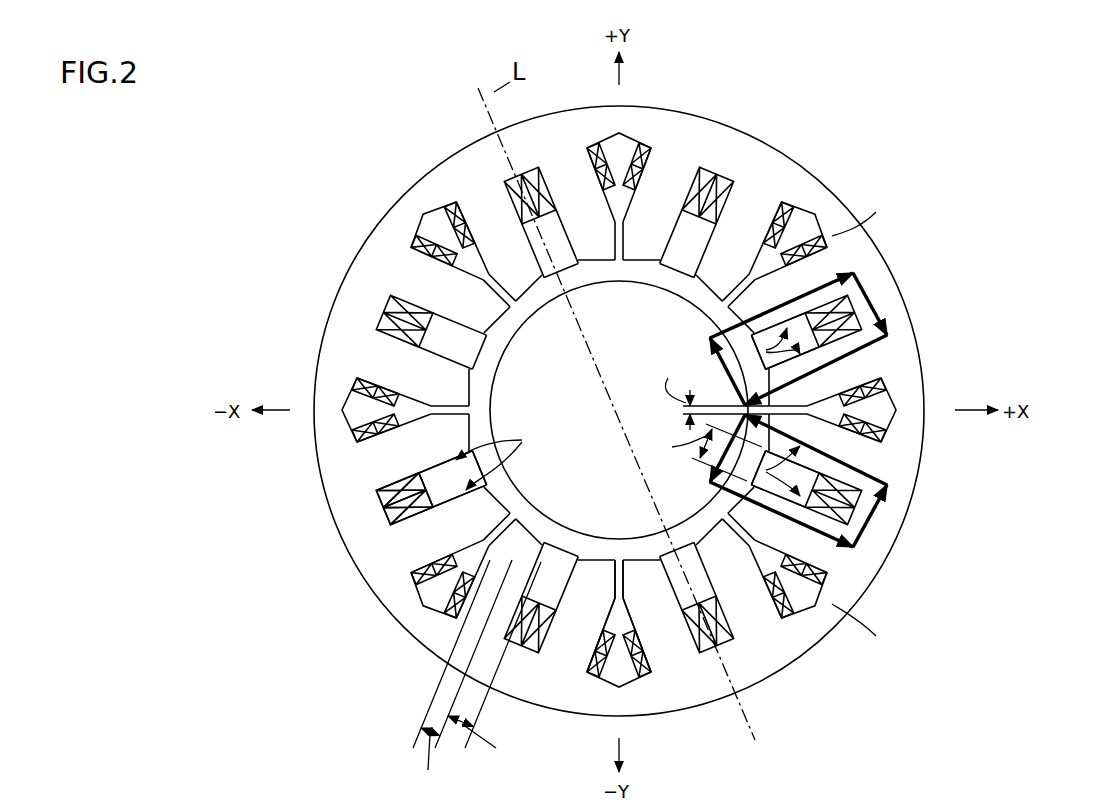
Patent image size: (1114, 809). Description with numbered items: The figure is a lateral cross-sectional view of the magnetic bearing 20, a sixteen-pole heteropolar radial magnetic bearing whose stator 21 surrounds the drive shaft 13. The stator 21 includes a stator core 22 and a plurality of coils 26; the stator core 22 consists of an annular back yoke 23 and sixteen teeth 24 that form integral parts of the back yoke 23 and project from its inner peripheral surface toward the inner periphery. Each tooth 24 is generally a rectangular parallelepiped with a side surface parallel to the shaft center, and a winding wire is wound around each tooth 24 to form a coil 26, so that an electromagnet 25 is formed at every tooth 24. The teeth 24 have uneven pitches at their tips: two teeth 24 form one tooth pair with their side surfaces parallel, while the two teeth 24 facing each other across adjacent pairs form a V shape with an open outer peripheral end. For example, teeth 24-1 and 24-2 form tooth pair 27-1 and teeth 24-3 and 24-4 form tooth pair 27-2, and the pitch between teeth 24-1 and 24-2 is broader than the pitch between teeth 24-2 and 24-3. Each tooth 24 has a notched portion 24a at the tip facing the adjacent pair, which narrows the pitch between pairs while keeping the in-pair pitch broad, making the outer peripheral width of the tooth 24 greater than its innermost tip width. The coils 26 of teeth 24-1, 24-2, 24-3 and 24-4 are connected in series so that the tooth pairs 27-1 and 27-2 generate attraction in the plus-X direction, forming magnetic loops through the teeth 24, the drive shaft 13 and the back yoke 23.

The drive shaft 13 is at (522, 404).
The magnetic bearing 20 is at (860, 100).
The stator 21 is at (246, 180).
The stator core 22 is at (296, 183).
The back yoke 23 is at (402, 228).
The tooth 24 is at (412, 276).
The notched portion 24a is at (640, 558).
The tooth 24-1 is at (835, 545).
The tooth 24-2 is at (850, 455).
The tooth 24-3 is at (842, 366).
The tooth 24-4 is at (830, 268).
The electromagnet 25 is at (452, 530).
The coil 26 is at (392, 311).
The tooth pair 27-1 is at (897, 489).
The tooth pair 27-2 is at (897, 325).